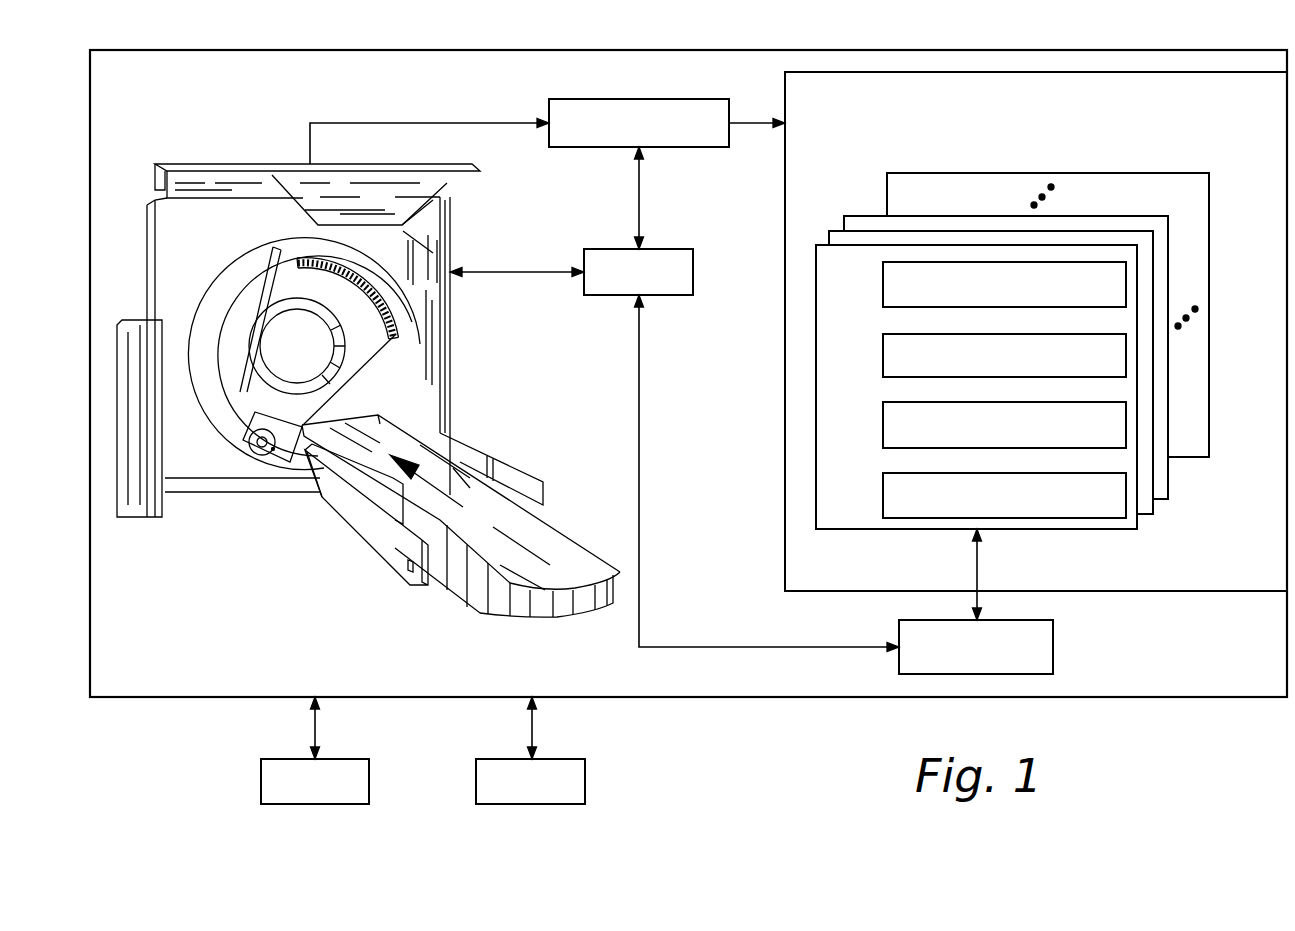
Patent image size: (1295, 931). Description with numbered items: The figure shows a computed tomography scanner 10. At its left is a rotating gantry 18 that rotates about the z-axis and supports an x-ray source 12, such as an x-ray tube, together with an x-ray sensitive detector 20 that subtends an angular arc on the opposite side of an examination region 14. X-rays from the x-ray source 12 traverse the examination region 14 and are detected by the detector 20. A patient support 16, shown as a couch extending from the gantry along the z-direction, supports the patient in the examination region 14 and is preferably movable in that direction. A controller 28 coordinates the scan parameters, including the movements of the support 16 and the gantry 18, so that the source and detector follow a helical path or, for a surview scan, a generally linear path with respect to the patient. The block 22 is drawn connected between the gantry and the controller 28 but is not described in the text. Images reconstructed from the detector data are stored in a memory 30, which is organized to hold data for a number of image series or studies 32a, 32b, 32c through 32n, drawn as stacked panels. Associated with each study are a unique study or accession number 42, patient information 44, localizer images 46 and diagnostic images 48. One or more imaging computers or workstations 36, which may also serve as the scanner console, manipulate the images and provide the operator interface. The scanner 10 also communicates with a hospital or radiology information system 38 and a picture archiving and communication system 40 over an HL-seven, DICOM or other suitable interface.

The computed tomography (CT) scanner 10 is at (1160, 702).
The x-ray source 12 is at (256, 447).
The examination region 14 is at (311, 355).
The patient support 16 is at (572, 555).
The rotating gantry 18 is at (278, 284).
The x-ray sensitive detector 20 is at (388, 298).
The controller 22 is at (680, 148).
The controller 28 is at (600, 298).
The memory 30 is at (984, 331).
The study 32a is at (987, 414).
The study 32b is at (1153, 508).
The study 32c is at (1168, 481).
The study 32n is at (1199, 425).
The imaging computer or workstation 36 is at (1053, 651).
The hospital information system/radiology information system (HIS/RIS) 38 is at (369, 781).
The picture archiving and communication system (PACS) 40 is at (585, 781).
The study or accession number 42 is at (883, 286).
The patient information 44 is at (883, 360).
The localizer images 46 is at (883, 428).
The diagnostic images 48 is at (883, 499).